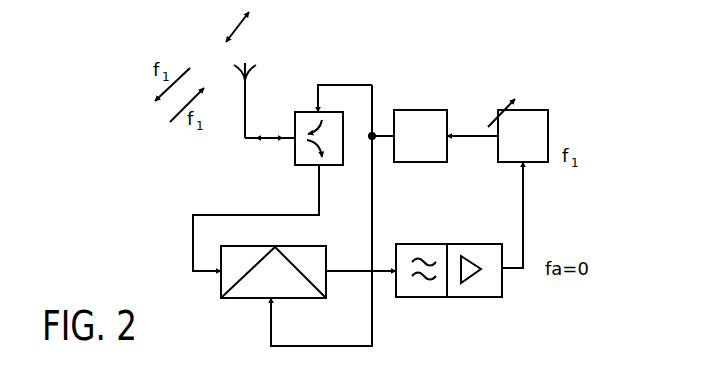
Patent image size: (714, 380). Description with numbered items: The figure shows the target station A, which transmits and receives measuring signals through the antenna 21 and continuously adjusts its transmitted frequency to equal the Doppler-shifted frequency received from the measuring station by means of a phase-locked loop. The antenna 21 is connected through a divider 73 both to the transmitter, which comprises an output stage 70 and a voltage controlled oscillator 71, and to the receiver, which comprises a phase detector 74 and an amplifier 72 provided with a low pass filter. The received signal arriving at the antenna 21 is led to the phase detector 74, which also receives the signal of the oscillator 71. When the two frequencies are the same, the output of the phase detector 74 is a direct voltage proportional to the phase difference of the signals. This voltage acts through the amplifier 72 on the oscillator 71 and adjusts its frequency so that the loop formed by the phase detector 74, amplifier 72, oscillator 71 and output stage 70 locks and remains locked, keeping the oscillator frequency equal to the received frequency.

The antenna 21 is at (262, 77).
The output stage 70 is at (418, 158).
The voltage controlled oscillator 71 is at (536, 155).
The amplifier 72 is at (460, 301).
The divider 73 is at (304, 170).
The phase detector 74 is at (252, 305).
The target station A is at (389, 98).